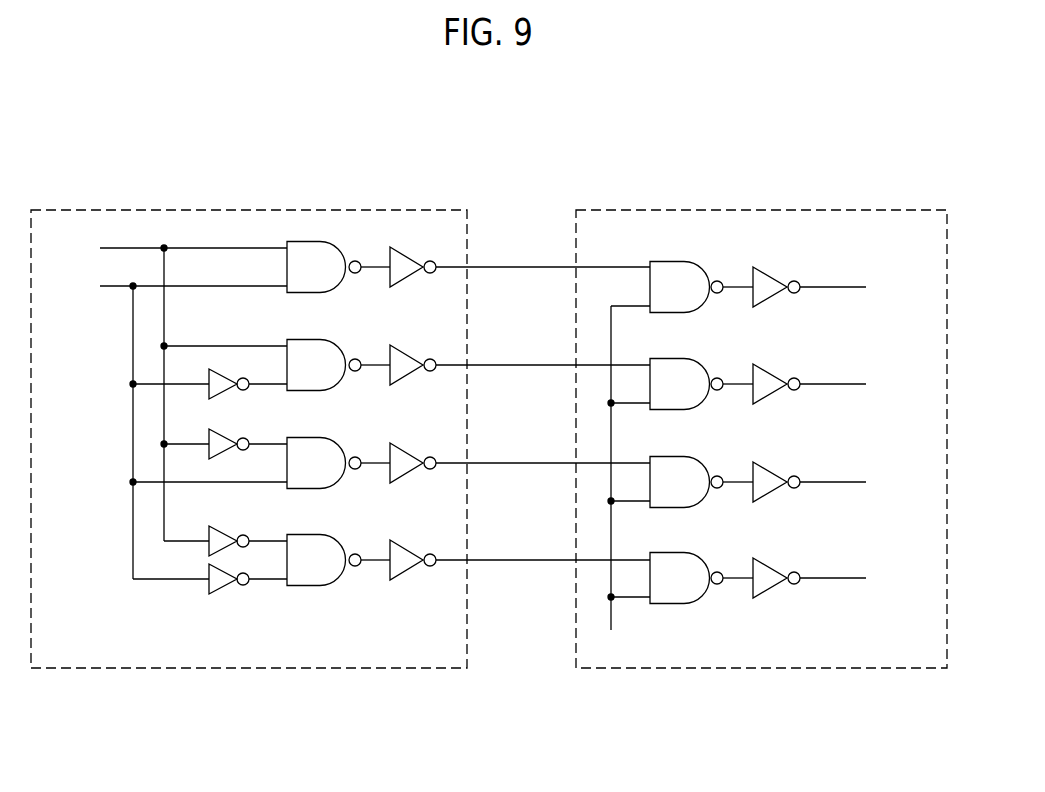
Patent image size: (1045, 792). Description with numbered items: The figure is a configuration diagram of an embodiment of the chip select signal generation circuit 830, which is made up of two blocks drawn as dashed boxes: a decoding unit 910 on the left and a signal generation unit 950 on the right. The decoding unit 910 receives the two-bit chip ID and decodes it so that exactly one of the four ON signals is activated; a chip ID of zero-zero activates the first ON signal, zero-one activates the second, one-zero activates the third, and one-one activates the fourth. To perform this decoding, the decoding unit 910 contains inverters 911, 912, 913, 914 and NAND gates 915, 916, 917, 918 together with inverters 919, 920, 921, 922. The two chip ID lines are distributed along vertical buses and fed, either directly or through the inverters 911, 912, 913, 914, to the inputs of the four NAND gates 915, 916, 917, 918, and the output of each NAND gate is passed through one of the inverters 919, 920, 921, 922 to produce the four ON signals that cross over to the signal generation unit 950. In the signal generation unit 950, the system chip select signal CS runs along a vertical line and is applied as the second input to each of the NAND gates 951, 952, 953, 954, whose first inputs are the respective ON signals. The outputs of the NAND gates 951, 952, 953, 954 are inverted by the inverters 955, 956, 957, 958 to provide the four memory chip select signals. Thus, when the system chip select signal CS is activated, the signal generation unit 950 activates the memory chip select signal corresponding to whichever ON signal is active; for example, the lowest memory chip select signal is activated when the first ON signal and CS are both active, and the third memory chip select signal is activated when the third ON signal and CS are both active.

The chip select signal generation circuit 830 is at (70, 179).
The decoding unit 910 is at (405, 669).
The signal generation unit 950 is at (888, 669).
The inverter 911 is at (229, 379).
The inverter 912 is at (229, 439).
The inverter 913 is at (229, 536).
The inverter 914 is at (229, 584).
The NAND gate 915 is at (305, 243).
The NAND gate 916 is at (305, 341).
The NAND gate 917 is at (305, 439).
The NAND gate 918 is at (305, 536).
The inverter 919 is at (412, 254).
The inverter 920 is at (412, 352).
The inverter 921 is at (412, 450).
The inverter 922 is at (412, 547).
The NAND gate 951 is at (667, 263).
The NAND gate 952 is at (667, 360).
The NAND gate 953 is at (667, 458).
The NAND gate 954 is at (667, 554).
The inverter 955 is at (772, 276).
The inverter 956 is at (772, 373).
The inverter 957 is at (772, 471).
The inverter 958 is at (772, 567).